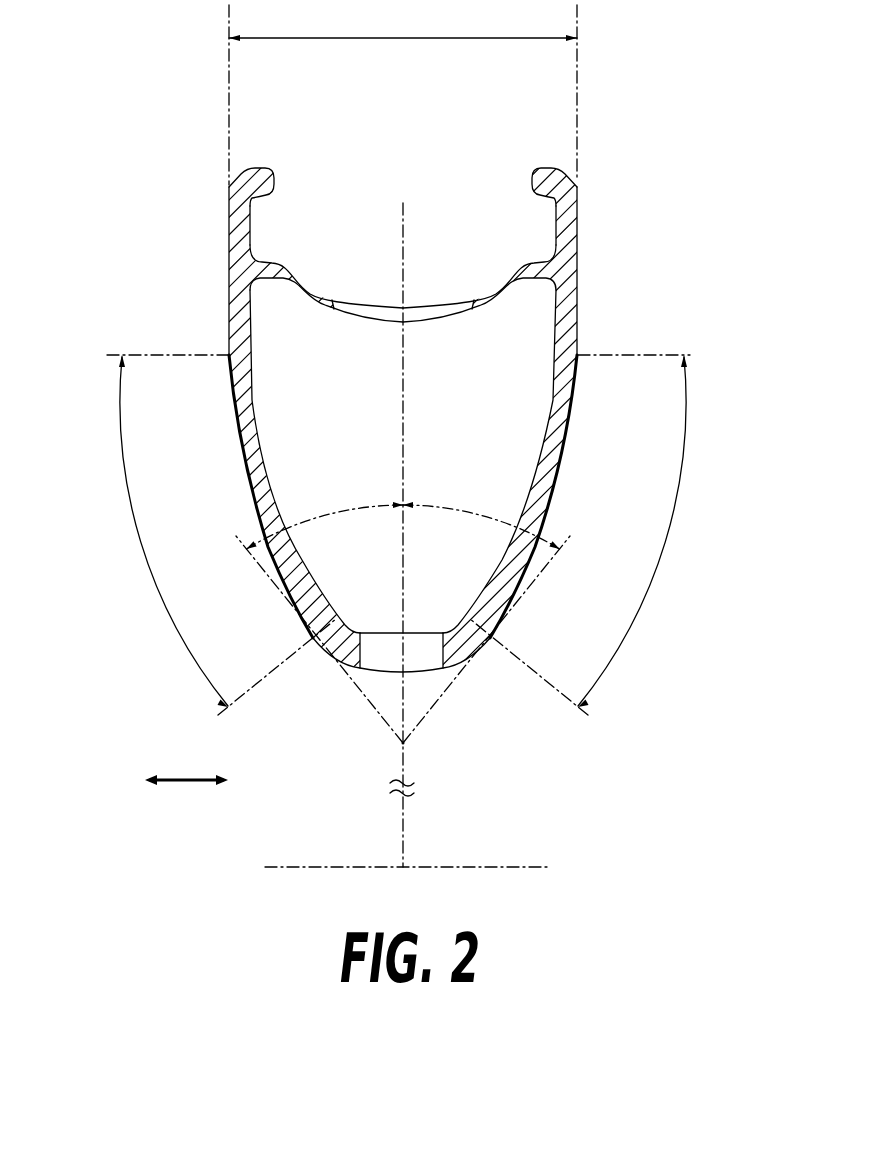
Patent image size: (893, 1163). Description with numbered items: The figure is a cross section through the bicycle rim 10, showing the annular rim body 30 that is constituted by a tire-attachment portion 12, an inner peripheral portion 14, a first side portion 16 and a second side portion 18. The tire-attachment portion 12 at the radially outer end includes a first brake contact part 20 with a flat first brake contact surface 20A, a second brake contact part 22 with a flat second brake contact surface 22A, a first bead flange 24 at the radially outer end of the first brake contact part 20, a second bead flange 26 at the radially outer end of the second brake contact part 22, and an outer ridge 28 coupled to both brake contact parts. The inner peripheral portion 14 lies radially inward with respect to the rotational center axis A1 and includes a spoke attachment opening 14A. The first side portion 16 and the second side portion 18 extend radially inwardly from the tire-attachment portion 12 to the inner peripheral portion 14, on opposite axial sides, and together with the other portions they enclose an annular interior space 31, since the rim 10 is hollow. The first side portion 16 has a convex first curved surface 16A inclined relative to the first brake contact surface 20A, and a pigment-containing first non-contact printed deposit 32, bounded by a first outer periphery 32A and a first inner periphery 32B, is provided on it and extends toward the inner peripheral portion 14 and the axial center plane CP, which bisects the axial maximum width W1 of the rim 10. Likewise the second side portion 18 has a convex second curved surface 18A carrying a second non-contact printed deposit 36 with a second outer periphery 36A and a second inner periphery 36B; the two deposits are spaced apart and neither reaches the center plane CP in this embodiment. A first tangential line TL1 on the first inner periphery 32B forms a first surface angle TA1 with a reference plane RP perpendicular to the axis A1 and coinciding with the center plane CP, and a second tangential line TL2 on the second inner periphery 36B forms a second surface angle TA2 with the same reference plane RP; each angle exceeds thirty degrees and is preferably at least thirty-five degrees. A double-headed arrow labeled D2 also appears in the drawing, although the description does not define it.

The bicycle rim 10 is at (604, 170).
The tire-attachment portion 12 is at (258, 92).
The inner peripheral portion 14 is at (405, 675).
The spoke attachment opening 14A is at (373, 650).
The first side portion 16 is at (550, 515).
The first curved surface 16A is at (553, 472).
The second side portion 18 is at (253, 512).
The second curved surface 18A is at (240, 466).
The first brake contact part 20 is at (557, 237).
The first brake contact surface 20A is at (578, 236).
The second brake contact part 22 is at (253, 238).
The second brake contact surface 22A is at (229, 216).
The first bead flange 24 is at (533, 183).
The second bead flange 26 is at (274, 183).
The outer ridge 28 is at (495, 290).
The annular rim body 30 is at (584, 306).
The annular interior space 31 is at (490, 398).
The first non-contact printed deposit 32 is at (663, 550).
The first outer periphery 32A is at (580, 352).
The first inner periphery 32B is at (491, 640).
The second non-contact printed deposit 36 is at (143, 560).
The second outer periphery 36A is at (229, 350).
The second inner periphery 36B is at (313, 640).
The axial center plane CP is at (405, 343).
The reference plane RP is at (407, 765).
The first surface angle TA1 is at (441, 505).
The second surface angle TA2 is at (340, 505).
The first tangential line TL1 is at (560, 549).
The second tangential line TL2 is at (246, 549).
The axial maximum width W1 is at (403, 95).
The axial direction D2 is at (182, 781).
The rotational center axis A1 is at (514, 866).